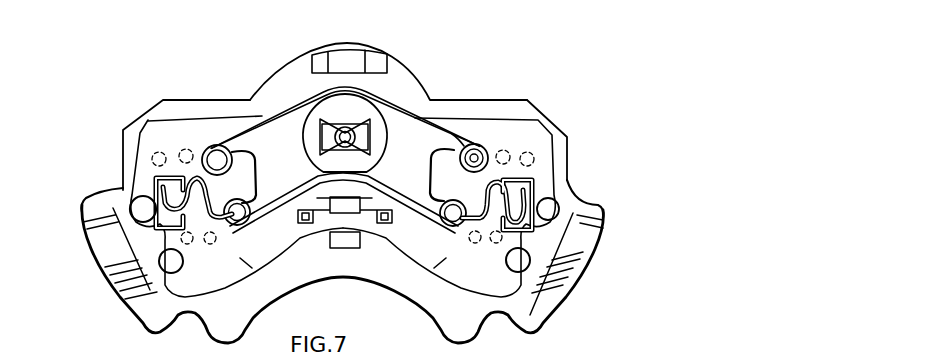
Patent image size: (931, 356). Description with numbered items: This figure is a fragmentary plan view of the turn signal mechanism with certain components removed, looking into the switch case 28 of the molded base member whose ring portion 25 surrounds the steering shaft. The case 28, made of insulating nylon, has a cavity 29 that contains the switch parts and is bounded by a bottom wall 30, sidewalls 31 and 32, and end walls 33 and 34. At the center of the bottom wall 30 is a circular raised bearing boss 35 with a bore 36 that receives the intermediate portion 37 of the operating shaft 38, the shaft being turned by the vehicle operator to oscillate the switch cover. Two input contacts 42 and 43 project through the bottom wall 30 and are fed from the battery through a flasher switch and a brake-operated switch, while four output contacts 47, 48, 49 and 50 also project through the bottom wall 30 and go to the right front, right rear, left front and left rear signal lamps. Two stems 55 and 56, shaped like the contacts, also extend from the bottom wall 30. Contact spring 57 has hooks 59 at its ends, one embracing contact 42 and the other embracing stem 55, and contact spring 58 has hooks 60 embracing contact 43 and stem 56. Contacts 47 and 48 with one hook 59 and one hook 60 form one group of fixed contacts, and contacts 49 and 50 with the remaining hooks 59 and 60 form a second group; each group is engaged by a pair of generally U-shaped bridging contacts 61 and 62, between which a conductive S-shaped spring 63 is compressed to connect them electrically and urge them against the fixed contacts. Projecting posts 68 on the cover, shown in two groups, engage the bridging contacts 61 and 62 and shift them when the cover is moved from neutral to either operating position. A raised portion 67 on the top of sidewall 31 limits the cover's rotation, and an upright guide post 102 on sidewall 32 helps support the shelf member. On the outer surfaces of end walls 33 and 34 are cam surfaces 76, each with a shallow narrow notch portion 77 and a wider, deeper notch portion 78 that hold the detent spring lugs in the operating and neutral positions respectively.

The ring portion 25 is at (417, 312).
The switch case 28 is at (538, 110).
The cavity 29 is at (190, 118).
The bottom wall 30 is at (232, 256).
The sidewall 31 is at (432, 100).
The sidewall 32 is at (441, 257).
The end wall 33 is at (602, 217).
The end wall 34 is at (90, 206).
The bearing boss 35 is at (378, 149).
The bore 36 is at (374, 151).
The intermediate portion of operating shaft 37 is at (330, 148).
The operating shaft 38 is at (372, 140).
The input contact 42 is at (245, 210).
The input contact 43 is at (240, 150).
The output contact 47 is at (560, 203).
The output contact 48 is at (510, 270).
The output contact 49 is at (167, 270).
The output contact 50 is at (136, 202).
The stem 55 is at (432, 208).
The stem 56 is at (453, 134).
The contact spring 57 is at (372, 185).
The contact spring 58 is at (398, 99).
The hook 59 is at (247, 264).
The hook 60 is at (215, 146).
The bridging contact 61 is at (156, 177).
The bridging contact 62 is at (190, 148).
The S-shaped spring 63 is at (176, 168).
The raised portion 67 is at (387, 62).
The projecting posts 68 is at (210, 243).
The cam surface 76 is at (110, 280).
The narrow notch portion 77 is at (128, 288).
The wide notch portion 78 is at (97, 240).
The guide post 102 is at (325, 226).